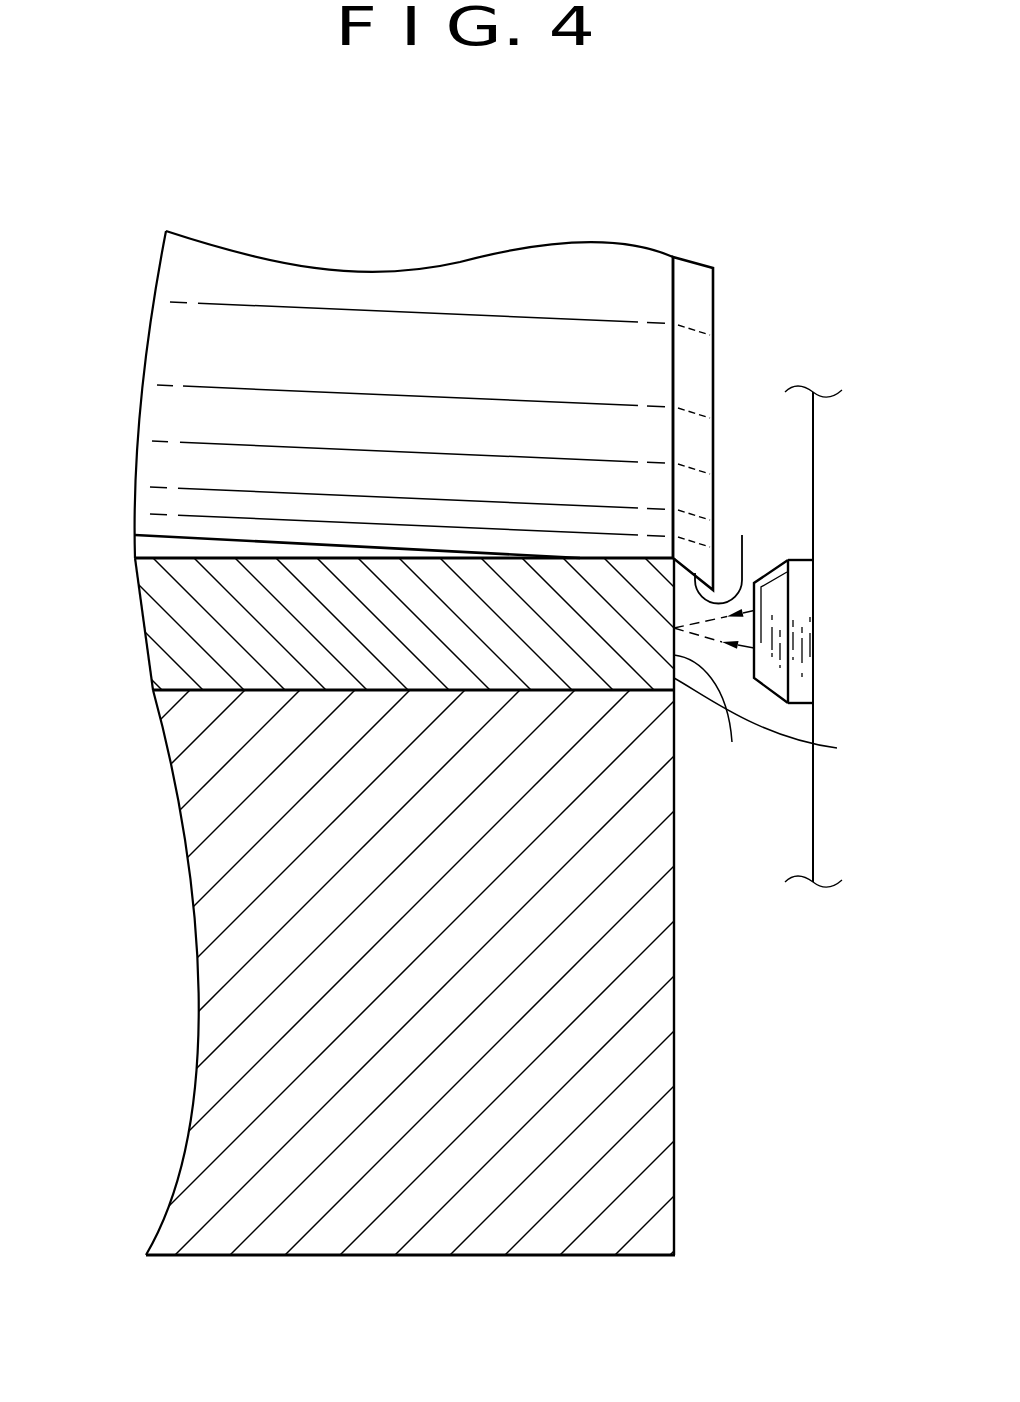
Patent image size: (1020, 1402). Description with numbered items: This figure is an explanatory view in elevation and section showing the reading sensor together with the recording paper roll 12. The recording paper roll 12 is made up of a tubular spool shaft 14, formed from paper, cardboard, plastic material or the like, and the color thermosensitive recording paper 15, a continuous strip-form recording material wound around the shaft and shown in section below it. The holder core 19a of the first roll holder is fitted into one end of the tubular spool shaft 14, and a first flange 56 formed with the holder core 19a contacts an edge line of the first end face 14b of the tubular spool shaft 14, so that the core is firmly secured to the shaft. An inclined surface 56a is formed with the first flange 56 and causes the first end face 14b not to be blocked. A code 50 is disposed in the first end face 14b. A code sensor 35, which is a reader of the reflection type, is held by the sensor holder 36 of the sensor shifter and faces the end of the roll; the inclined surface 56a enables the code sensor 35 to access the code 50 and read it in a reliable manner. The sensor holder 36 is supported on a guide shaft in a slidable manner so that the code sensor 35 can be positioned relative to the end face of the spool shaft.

The recording paper roll 12 is at (530, 1264).
The tubular spool shaft 14 is at (257, 553).
The first end face of the tubular spool shaft 14b is at (718, 720).
The color thermosensitive recording paper 15 is at (343, 1227).
The holder core 19a is at (418, 297).
The code sensor 35 is at (780, 608).
The sensor holder 36 is at (798, 828).
The code 50 is at (776, 720).
The first flange 56 is at (713, 350).
The inclined surface 56a is at (742, 535).